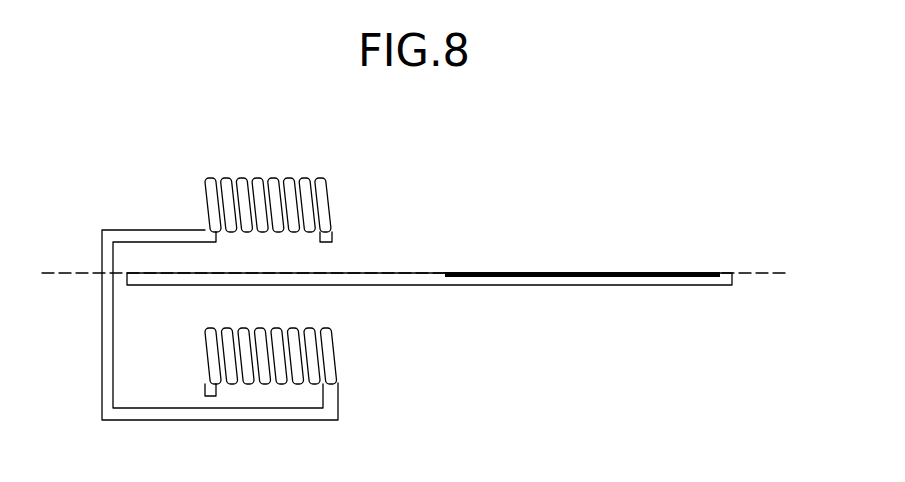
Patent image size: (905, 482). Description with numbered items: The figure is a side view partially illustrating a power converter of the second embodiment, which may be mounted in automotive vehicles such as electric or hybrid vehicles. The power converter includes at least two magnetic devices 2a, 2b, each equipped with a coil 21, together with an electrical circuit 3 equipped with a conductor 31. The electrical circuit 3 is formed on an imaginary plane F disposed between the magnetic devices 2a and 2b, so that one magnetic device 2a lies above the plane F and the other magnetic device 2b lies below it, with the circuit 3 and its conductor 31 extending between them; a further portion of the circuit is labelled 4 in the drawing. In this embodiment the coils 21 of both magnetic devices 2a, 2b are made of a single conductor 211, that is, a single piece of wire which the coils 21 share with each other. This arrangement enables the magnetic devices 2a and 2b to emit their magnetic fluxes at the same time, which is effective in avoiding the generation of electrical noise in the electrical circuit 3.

The magnetic device 2a is at (258, 178).
The magnetic device 2b is at (288, 373).
The coil 21 is at (231, 281).
The conductor 211 is at (238, 178).
The electrical circuit 3 is at (446, 251).
The conductor 31 is at (630, 270).
The plate body 4 is at (478, 285).
The imaginary plane F is at (775, 273).